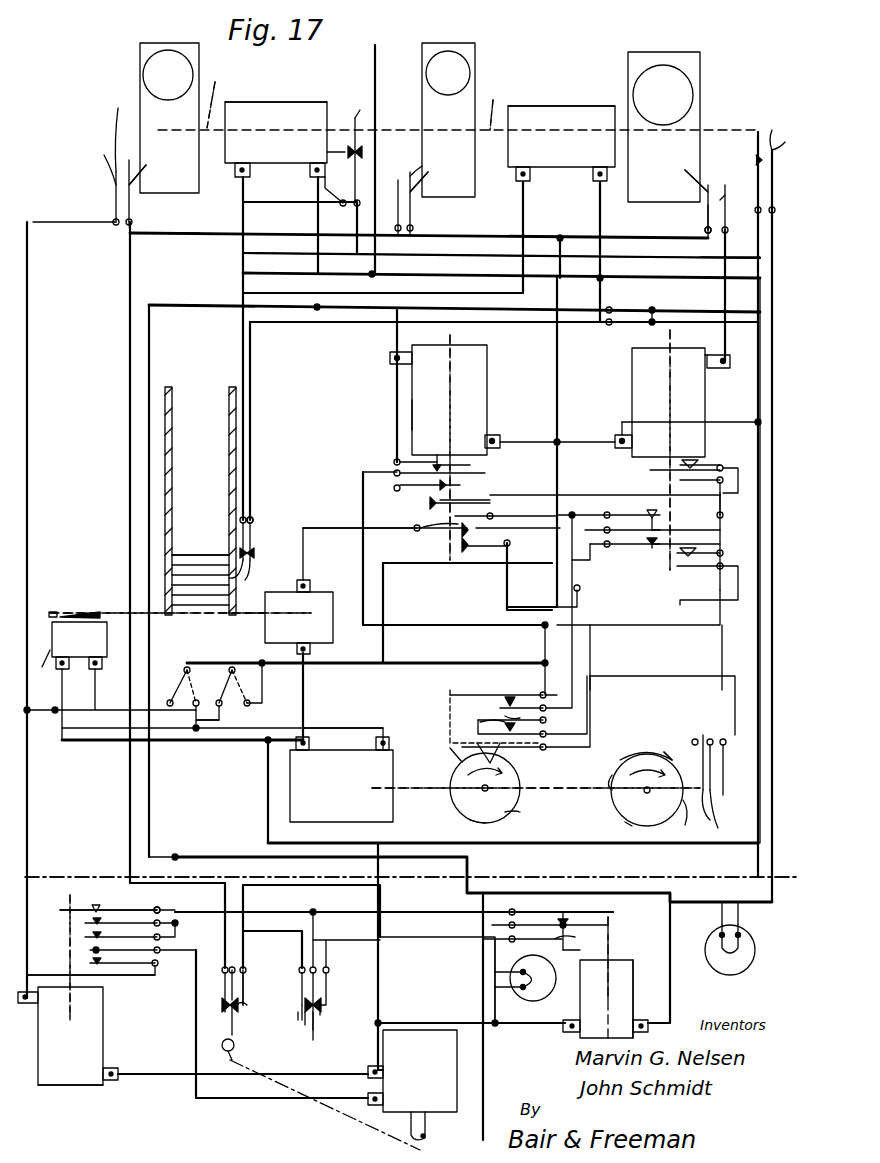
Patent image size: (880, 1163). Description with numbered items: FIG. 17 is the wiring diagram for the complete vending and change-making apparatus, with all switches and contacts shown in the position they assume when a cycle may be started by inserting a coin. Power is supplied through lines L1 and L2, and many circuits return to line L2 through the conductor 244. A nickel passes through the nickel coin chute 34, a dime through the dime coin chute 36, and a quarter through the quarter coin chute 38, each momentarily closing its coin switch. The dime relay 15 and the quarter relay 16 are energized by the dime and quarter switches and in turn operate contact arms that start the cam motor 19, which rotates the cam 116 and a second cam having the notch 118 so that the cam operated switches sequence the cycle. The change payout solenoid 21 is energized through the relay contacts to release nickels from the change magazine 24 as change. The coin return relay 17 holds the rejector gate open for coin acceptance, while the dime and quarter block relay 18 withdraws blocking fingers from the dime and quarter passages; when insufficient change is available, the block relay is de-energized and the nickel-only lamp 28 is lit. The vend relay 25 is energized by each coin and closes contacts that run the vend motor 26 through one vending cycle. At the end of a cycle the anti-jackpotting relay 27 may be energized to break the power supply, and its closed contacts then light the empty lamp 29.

The coin return relay 17 is at (276, 139).
The dime and quarter block relay 18 is at (540, 95).
The dime relay 15 is at (487, 378).
The quarter relay 16 is at (632, 380).
The motor 19 is at (393, 772).
The change payout solenoid 21 is at (335, 605).
The change magazine 24 is at (201, 398).
The vend relay 25 is at (82, 1085).
The vend motor 26 is at (405, 1108).
The anti-jackpotting relay 27 is at (585, 1006).
The "5¢ only" lamp 28 is at (745, 960).
The "empty" lamp 29 is at (540, 968).
The nickel coin chute 34 is at (140, 80).
The dime coin chute 36 is at (422, 110).
The quarter coin chute 38 is at (700, 72).
The cam 116 is at (618, 805).
The notch 118 is at (512, 758).
The conductor 244 is at (548, 860).
The line L1 is at (485, 1026).
The line L2 is at (384, 148).